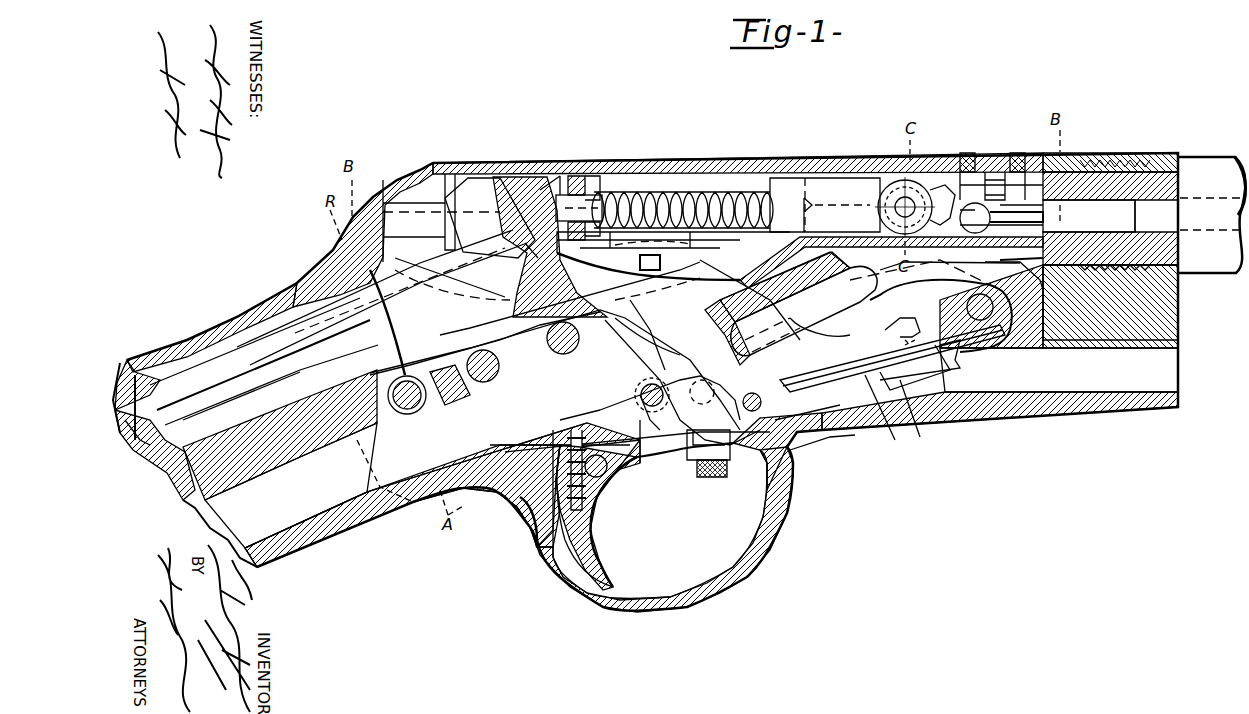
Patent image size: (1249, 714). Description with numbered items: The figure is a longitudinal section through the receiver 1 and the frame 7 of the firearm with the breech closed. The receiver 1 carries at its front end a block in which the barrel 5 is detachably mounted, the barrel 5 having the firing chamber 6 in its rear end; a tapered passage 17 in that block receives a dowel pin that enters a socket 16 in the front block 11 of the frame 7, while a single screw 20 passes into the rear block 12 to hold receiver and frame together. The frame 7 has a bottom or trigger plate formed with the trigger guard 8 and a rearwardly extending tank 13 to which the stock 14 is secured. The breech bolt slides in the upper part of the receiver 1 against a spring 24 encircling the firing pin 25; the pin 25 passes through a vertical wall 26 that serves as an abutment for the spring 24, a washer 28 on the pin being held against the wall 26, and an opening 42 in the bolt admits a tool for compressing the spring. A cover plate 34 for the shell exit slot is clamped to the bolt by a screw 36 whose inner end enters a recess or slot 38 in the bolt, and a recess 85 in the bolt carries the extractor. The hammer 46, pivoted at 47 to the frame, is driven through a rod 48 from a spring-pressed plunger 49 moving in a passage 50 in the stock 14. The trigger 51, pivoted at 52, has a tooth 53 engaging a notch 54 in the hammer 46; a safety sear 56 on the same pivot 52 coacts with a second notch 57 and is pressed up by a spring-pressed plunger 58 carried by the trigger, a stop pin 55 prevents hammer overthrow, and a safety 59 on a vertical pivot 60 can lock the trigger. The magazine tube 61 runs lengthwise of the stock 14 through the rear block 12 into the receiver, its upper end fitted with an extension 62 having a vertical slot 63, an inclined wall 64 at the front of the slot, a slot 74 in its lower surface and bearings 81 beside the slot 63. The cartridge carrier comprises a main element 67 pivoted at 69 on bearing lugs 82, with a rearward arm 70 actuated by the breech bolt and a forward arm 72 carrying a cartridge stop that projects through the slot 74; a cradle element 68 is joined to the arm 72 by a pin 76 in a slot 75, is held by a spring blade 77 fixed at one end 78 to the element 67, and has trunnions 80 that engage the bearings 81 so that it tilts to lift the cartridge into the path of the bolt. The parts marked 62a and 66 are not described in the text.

The receiver 1 is at (842, 158).
The barrel 5 is at (1198, 165).
The firing chamber 6 is at (1110, 216).
The frame 7 is at (953, 415).
The trigger guard 8 is at (705, 600).
The front block of the frame 11 is at (1040, 345).
The rear block of the frame 12 is at (425, 480).
The tank 13 is at (212, 330).
The stock 14 is at (185, 495).
The socket 16 is at (1059, 370).
The passage 17 is at (1108, 380).
The screw 20 is at (425, 380).
The spring 24 is at (600, 205).
The firing pin 25 is at (680, 192).
The vertical wall 26 is at (585, 178).
The washer 28 is at (598, 190).
The cover plate 34 is at (830, 200).
The screw 36 is at (900, 208).
The recess or slot 38 is at (912, 185).
The opening 42 is at (645, 265).
The hammer 46 is at (517, 158).
The pivot 47 is at (547, 338).
The rod 48 is at (387, 297).
The spring-pressed plunger 49 is at (137, 440).
The passage 50 is at (240, 352).
The trigger 51 is at (598, 538).
The pivot 52 is at (645, 388).
The tooth 53 is at (647, 329).
The notch 54 is at (635, 395).
The stop pin 55 is at (483, 352).
The safety sear 56 is at (605, 420).
The second notch 57 is at (505, 400).
The spring-pressed plunger 58 is at (590, 478).
The safety 59 is at (700, 458).
The vertical pivot 60 is at (848, 430).
The magazine tube 61 is at (291, 485).
The extension 62 is at (800, 270).
The hammer strut 62a is at (830, 385).
The slot 63 is at (845, 330).
The inclined wall 64 is at (1000, 275).
The bolt guide bar 66 is at (800, 256).
The main element of the cartridge carrier 67 is at (740, 340).
The cradle element of the cartridge carrier 68 is at (917, 367).
The pivot 69 is at (805, 440).
The arm 70 is at (657, 292).
The arm 72 is at (917, 415).
The slot 74 is at (825, 305).
The slot 75 is at (920, 340).
The pin 76 is at (915, 332).
The spring blade 77 is at (885, 413).
The fixed end of spring blade 78 is at (760, 400).
The shoulders or trunnions 80 is at (995, 308).
The bearings 81 is at (960, 280).
The bearing lugs 82 is at (790, 455).
The recess 85 is at (998, 160).